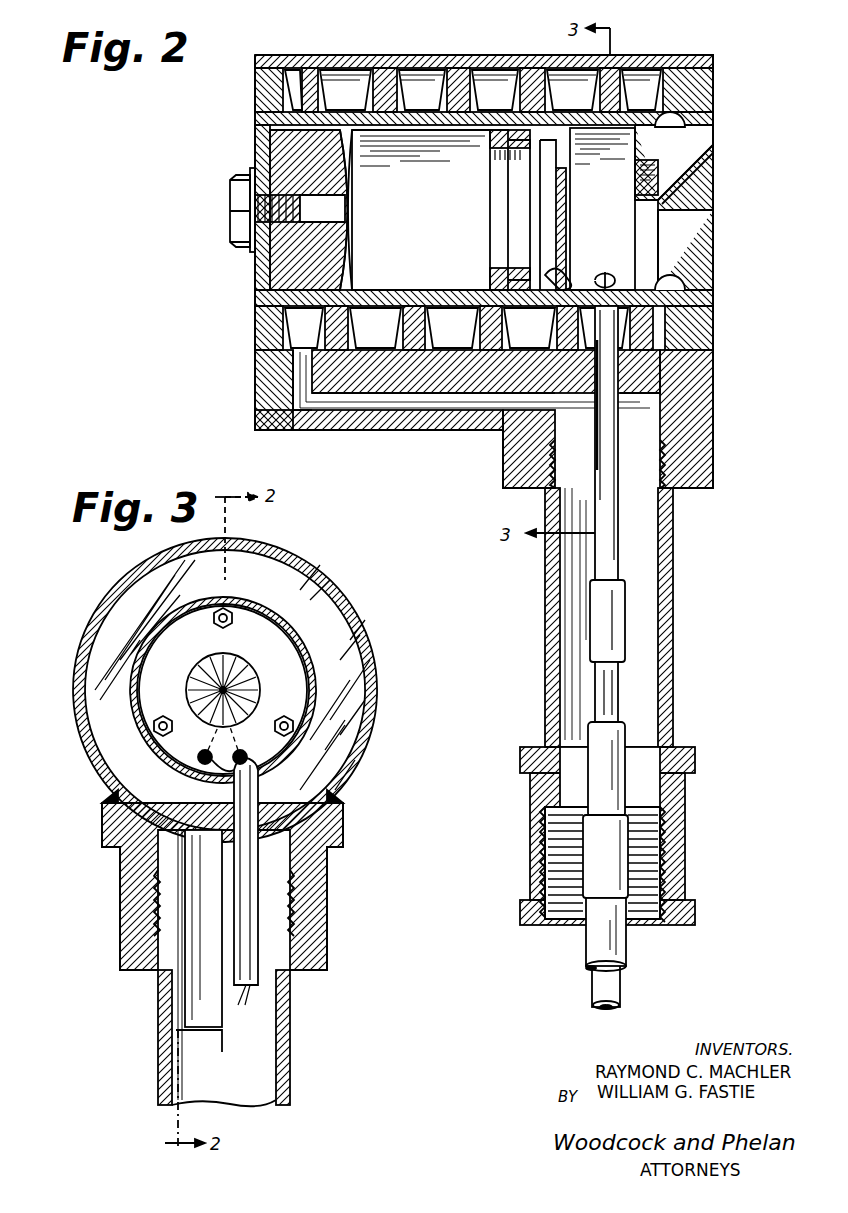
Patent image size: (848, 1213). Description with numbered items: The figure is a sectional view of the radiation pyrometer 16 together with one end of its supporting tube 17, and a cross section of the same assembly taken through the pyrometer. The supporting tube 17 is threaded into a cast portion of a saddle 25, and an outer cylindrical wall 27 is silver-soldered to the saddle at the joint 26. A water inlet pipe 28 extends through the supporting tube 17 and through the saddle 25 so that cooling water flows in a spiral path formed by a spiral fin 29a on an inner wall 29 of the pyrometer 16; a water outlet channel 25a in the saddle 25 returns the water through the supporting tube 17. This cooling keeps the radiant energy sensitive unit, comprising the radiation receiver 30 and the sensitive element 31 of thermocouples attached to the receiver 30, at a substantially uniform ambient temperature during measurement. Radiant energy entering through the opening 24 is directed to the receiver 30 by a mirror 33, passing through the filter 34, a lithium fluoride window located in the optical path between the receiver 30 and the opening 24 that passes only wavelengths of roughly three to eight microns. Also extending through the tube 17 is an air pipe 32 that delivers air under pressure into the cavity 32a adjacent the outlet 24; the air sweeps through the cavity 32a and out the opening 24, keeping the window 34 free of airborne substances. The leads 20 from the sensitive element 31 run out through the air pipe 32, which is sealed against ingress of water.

In FIG. 2, the pyrometer 16 is at (204, 266).
In FIG. 2, the supporting tube 17 is at (668, 645).
In FIG. 3, the supporting tube 17 is at (290, 1052).
In FIG. 3, the leads 20 is at (228, 876).
In FIG. 2, the opening 24 is at (656, 210).
In FIG. 2, the saddle 25 is at (704, 452).
In FIG. 3, the saddle 25 is at (320, 911).
In FIG. 2, the water outlet channel 25a is at (316, 402).
In FIG. 3, the silver-soldered joint 26 is at (104, 797).
In FIG. 3, the outer cylindrical wall 27 is at (365, 622).
In FIG. 2, the water inlet pipe 28 is at (612, 744).
In FIG. 3, the water inlet pipe 28 is at (185, 1015).
In FIG. 2, the inner wall 29 is at (450, 127).
In FIG. 3, the inner wall 29 is at (258, 600).
In FIG. 2, the spiral fin 29a is at (397, 72).
In FIG. 3, the spiral fin 29a is at (352, 678).
In FIG. 2, the radiation receiver 30 is at (503, 203).
In FIG. 3, the sensitive element 31 is at (240, 683).
In FIG. 2, the air inlet pipe 32 is at (620, 558).
In FIG. 3, the air inlet pipe 32 is at (262, 980).
In FIG. 2, the cavity 32a is at (590, 209).
In FIG. 2, the mirror 33 is at (335, 243).
In FIG. 2, the filter 34 is at (567, 226).